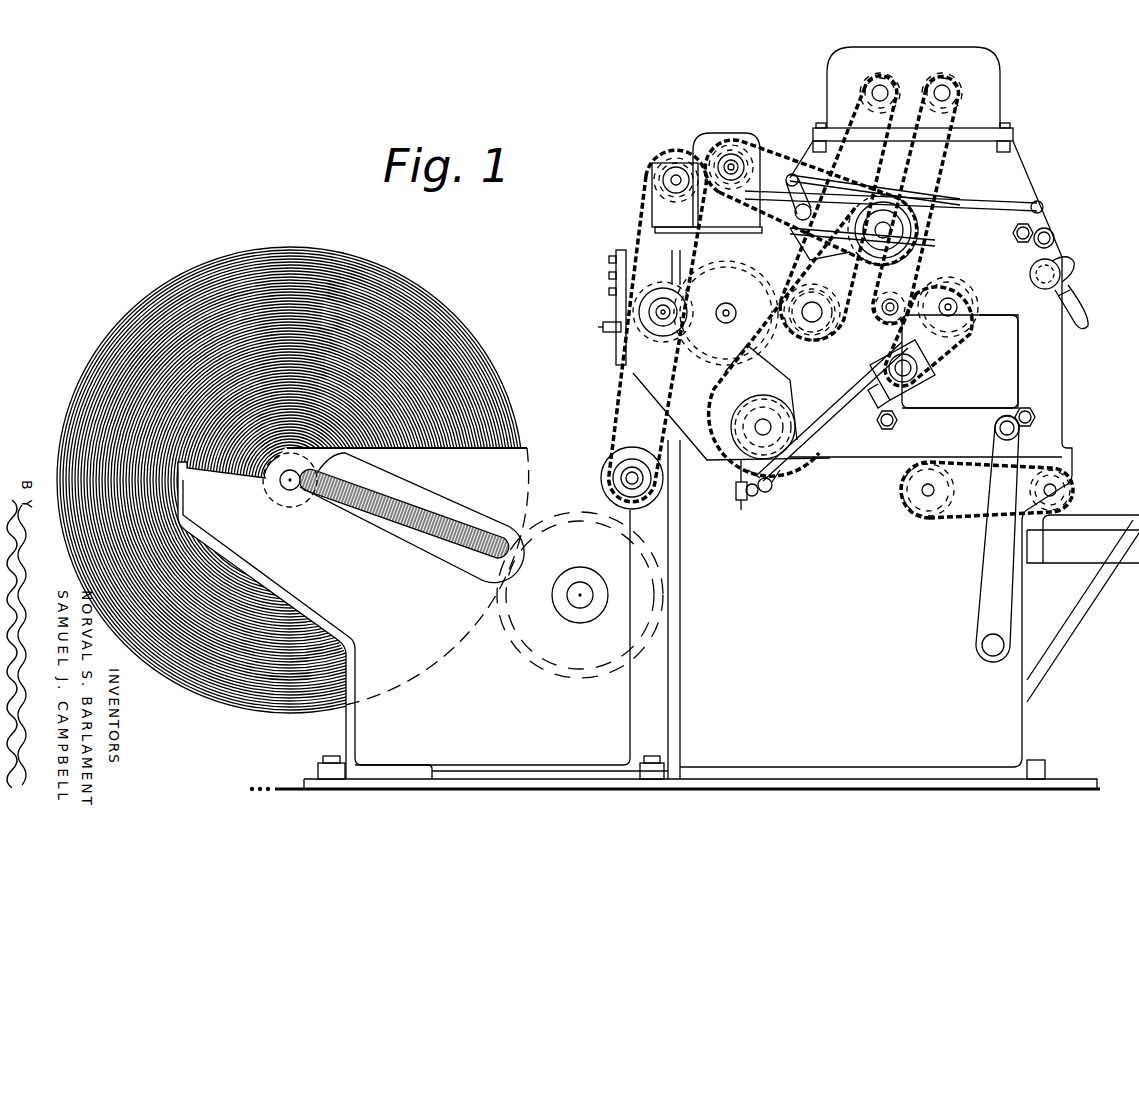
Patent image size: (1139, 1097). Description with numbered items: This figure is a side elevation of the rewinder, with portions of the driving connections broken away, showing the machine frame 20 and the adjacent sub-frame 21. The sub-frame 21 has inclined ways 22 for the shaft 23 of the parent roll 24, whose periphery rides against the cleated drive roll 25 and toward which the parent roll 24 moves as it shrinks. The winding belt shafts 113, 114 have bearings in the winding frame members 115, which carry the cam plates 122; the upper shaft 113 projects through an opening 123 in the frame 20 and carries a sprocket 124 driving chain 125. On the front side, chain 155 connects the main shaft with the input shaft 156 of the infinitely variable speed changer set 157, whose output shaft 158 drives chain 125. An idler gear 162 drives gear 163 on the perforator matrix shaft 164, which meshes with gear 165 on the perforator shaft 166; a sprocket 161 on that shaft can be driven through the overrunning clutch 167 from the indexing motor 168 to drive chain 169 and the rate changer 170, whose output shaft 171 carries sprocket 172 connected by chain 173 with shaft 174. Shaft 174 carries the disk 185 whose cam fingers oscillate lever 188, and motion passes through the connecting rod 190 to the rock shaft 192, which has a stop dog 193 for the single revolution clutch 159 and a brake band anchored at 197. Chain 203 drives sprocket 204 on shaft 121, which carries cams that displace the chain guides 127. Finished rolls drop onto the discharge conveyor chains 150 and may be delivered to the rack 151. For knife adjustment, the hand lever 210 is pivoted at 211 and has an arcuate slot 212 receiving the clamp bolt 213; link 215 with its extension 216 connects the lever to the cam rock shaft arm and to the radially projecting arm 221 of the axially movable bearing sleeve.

The frame 20 is at (1045, 392).
The sub-frame 21 is at (528, 445).
The inclined ways 22 is at (420, 505).
The shaft 23 is at (293, 497).
The parent roll 24 is at (445, 348).
The cleated drive roll 25 is at (662, 600).
The upper shaft 113 is at (900, 300).
The lower shaft 114 is at (912, 370).
The winding frame members 115 is at (905, 386).
The shaft 121 is at (958, 307).
The cam plates 122 is at (882, 418).
The opening 123 is at (935, 250).
The sprocket 124 is at (910, 292).
The chain 125 is at (948, 158).
The chain guides 127 is at (786, 190).
The chains of the discharge conveyor 150 is at (978, 468).
The rack 151 is at (1106, 518).
The chain 155 is at (855, 116).
The input shaft 156 is at (880, 82).
The infinitely variable speed changer set 157 is at (945, 62).
The output shaft 158 is at (955, 90).
The single revolution clutch 159 is at (775, 440).
The sprocket 161 is at (622, 288).
The idler gear 162 is at (761, 416).
The gear 163 is at (738, 285).
The perforator matrix shaft 164 is at (726, 300).
The gear 165 is at (664, 290).
The perforator shaft 166 is at (663, 340).
The overrunning clutch 167 is at (622, 328).
The indexing motor 168 is at (602, 483).
The chain 169 is at (640, 235).
The rate changer 170 is at (688, 150).
The output shaft 171 is at (736, 145).
The sprocket 172 is at (745, 160).
The chain 173 is at (756, 140).
The shaft 174 is at (892, 230).
The disk 185 is at (880, 291).
The lever 188 is at (928, 240).
The connecting rod 190 is at (848, 412).
The rock shaft 192 is at (760, 496).
The stop dog 193 is at (774, 488).
The anchor 197 is at (742, 504).
The chain 203 is at (940, 352).
The sprocket 204 is at (950, 325).
The hand lever 210 is at (1086, 319).
The pivot 211 is at (1056, 240).
The arcuate slot 212 is at (1070, 266).
The clamp bolt 213 is at (1064, 282).
The link 215 is at (998, 202).
The extension 216 is at (872, 186).
The radially projecting arm 221 is at (800, 250).